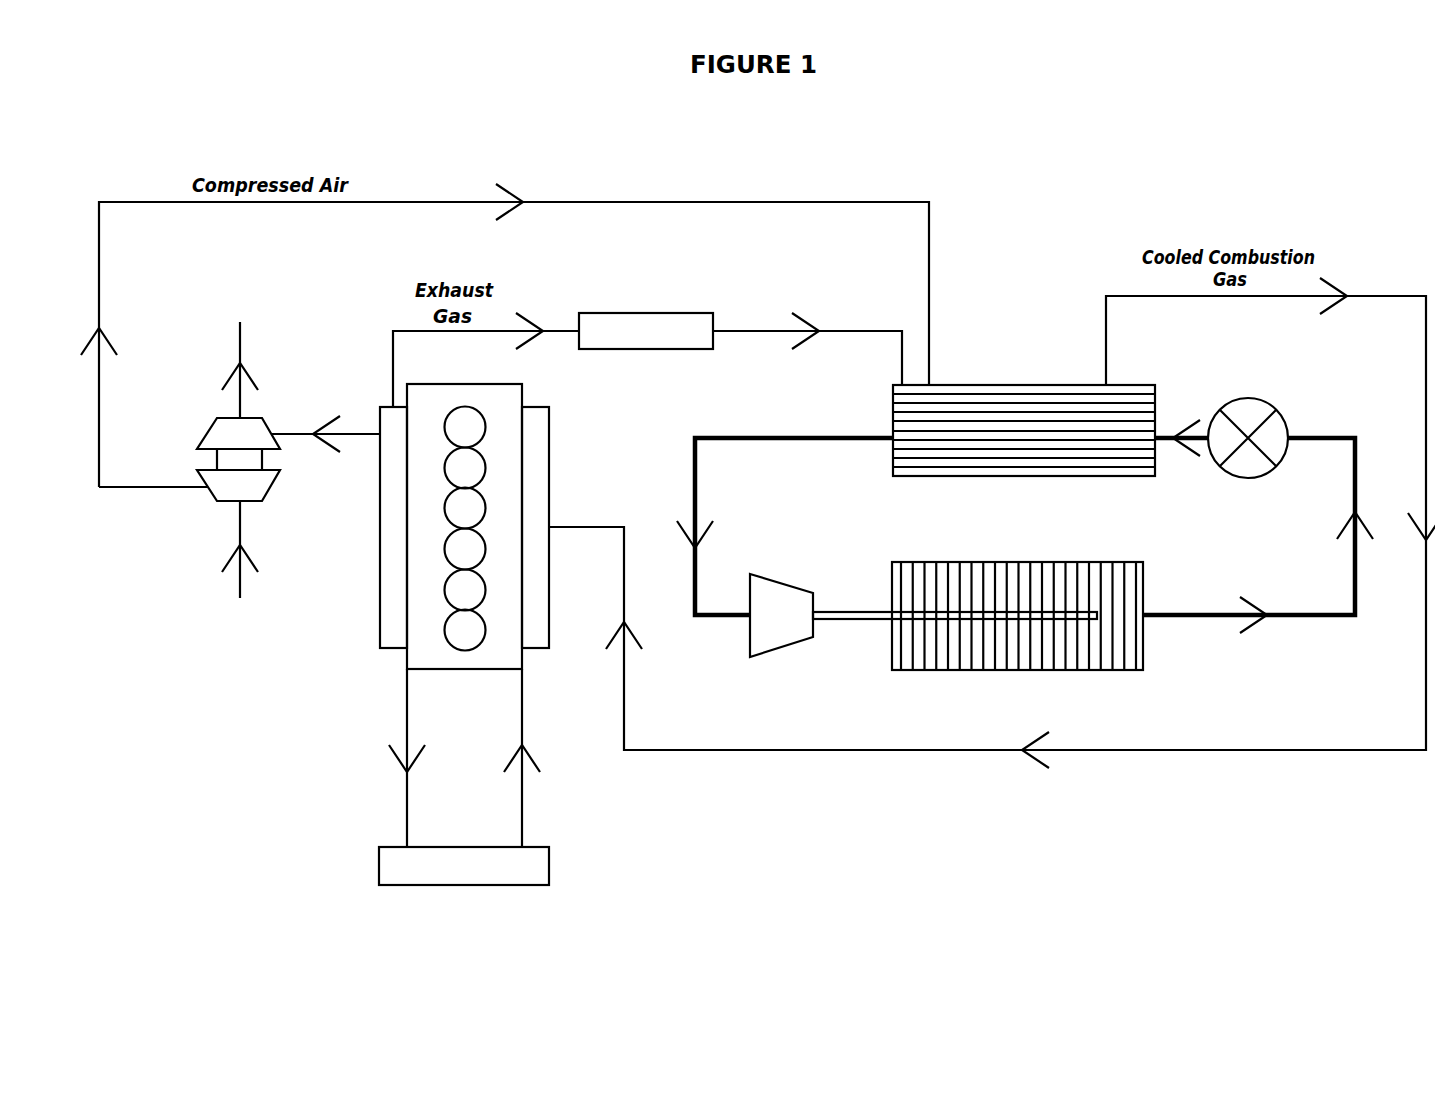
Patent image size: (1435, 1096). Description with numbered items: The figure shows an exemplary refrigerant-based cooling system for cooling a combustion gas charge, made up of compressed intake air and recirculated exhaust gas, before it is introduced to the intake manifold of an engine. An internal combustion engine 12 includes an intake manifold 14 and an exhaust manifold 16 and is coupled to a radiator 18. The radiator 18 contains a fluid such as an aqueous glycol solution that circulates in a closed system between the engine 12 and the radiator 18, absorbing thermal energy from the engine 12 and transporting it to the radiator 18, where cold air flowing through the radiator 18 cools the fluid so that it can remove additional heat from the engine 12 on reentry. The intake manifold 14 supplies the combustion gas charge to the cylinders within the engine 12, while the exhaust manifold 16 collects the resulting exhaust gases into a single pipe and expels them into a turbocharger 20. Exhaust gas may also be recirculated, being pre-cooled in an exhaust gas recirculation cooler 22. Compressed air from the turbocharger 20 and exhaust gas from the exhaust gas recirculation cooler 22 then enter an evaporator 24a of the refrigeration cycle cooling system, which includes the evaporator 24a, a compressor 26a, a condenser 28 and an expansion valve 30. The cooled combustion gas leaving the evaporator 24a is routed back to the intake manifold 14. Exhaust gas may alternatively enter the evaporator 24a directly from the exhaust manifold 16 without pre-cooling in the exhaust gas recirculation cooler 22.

The internal combustion engine 12 is at (464, 615).
The intake manifold 14 is at (555, 527).
The exhaust manifold 16 is at (372, 527).
The radiator 18 is at (464, 887).
The turbocharger 20 is at (239, 477).
The exhaust gas recirculation (EGR) cooler 22 is at (740, 325).
The evaporator 24a is at (1024, 409).
The compressor 26a is at (923, 634).
The condenser 28 is at (1017, 636).
The expansion valve 30 is at (1260, 426).